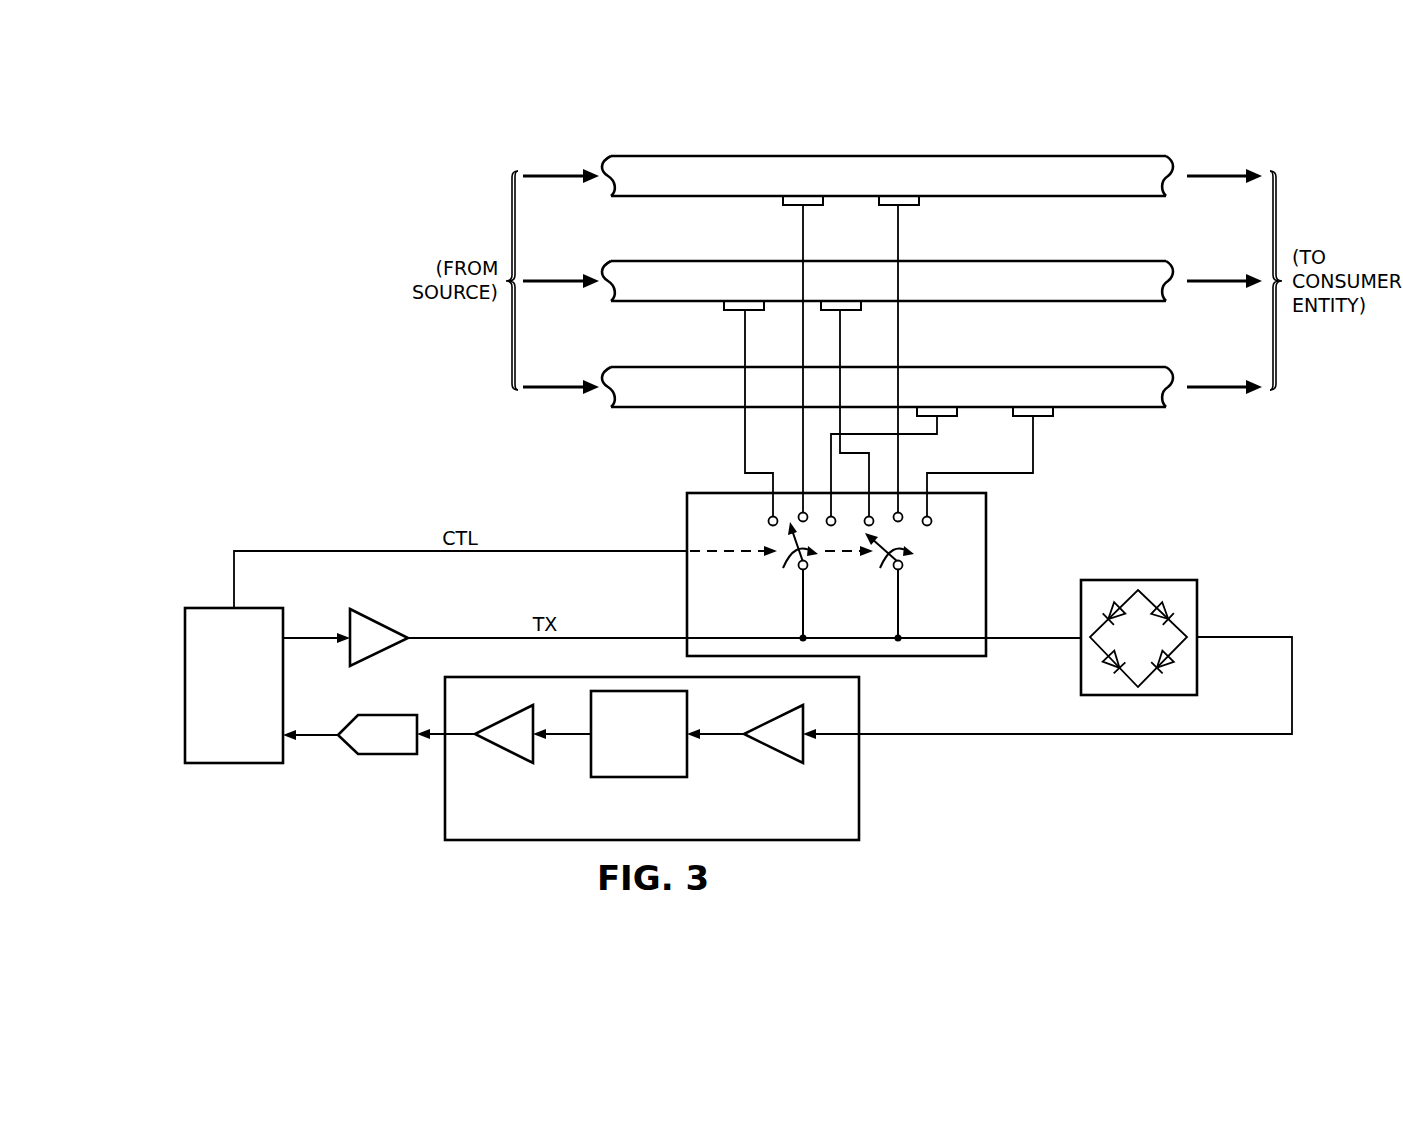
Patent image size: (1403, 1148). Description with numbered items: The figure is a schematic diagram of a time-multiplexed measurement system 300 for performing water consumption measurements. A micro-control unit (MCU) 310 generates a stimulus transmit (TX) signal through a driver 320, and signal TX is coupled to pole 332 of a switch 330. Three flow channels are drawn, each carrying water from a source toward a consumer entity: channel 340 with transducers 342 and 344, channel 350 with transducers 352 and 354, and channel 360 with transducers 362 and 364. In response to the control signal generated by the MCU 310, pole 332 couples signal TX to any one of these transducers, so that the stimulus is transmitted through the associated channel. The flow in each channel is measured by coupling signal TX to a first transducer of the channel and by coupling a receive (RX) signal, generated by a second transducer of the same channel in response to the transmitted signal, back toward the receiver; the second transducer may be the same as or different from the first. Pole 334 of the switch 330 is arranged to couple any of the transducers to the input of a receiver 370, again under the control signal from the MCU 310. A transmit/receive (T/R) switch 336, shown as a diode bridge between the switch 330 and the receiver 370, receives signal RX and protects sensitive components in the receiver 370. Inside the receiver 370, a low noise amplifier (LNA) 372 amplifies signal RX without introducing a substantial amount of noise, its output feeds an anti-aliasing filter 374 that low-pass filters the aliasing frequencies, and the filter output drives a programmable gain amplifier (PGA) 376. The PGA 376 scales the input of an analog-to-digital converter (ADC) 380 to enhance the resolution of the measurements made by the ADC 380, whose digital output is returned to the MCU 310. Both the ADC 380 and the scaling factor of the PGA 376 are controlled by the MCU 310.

The time-multiplexed measurement system 300 is at (336, 300).
The micro-control unit (MCU) 310 is at (252, 713).
The driver 320 is at (378, 624).
The switch 330 is at (1000, 578).
The pole 332 is at (809, 571).
The pole 334 is at (905, 571).
The transmit/receive (T/R) switch 336 is at (1212, 657).
The channel 340 is at (887, 156).
The transducer 342 is at (790, 208).
The transducer 344 is at (910, 208).
The channel 350 is at (1040, 261).
The transducer 352 is at (731, 313).
The transducer 354 is at (850, 313).
The channel 360 is at (1042, 367).
The transducer 362 is at (948, 420).
The transducer 364 is at (1044, 420).
The receiver 370 is at (873, 784).
The low noise amplifier (LNA) 372 is at (772, 753).
The anti-aliasing filter 374 is at (640, 778).
The programmable gain amplifier (PGA) 376 is at (505, 753).
The analog-to-digital converter (ADC) 380 is at (390, 757).